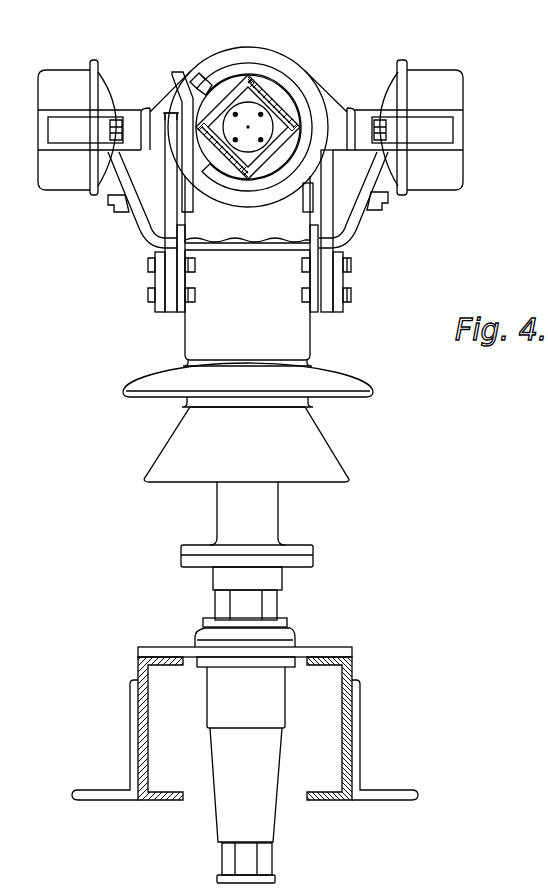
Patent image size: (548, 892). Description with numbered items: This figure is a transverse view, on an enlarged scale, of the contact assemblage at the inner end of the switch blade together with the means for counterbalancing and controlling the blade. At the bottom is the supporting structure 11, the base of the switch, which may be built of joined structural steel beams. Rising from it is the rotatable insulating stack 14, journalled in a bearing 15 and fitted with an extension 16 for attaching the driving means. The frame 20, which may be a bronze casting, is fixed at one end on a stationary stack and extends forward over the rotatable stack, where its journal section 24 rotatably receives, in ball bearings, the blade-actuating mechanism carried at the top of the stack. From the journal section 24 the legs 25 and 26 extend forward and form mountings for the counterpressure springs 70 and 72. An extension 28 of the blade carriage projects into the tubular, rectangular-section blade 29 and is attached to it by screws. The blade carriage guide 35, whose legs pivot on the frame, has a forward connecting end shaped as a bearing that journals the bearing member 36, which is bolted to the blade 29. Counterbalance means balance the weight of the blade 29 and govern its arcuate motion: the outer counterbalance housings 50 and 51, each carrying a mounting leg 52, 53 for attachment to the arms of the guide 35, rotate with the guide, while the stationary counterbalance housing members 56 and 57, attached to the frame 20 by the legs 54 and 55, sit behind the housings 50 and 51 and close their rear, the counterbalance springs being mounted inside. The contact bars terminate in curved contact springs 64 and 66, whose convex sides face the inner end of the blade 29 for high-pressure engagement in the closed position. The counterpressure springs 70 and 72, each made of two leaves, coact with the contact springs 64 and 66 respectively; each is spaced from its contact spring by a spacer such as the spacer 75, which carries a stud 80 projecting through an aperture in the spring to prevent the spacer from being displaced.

The supporting structure 11 is at (386, 714).
The rotatable insulating stack 14 is at (366, 477).
The bearing 15 is at (295, 630).
The extension 16 is at (228, 837).
The frame 20 is at (232, 305).
The journal section 24 is at (233, 243).
The leg 25 is at (317, 312).
The leg 26 is at (178, 312).
The extension 28 is at (250, 98).
The blade 29 is at (275, 90).
The blade carriage guide 35 is at (228, 49).
The bearing member 36 is at (213, 77).
The outer counterbalance housing 50 is at (450, 96).
The outer counterbalance housing 51 is at (45, 97).
The mounting leg 52 is at (430, 137).
The mounting leg 53 is at (75, 138).
The leg 54 is at (362, 218).
The leg 55 is at (132, 217).
The stationary counterbalance housing member 56 is at (388, 92).
The stationary counterbalance housing member 57 is at (103, 88).
The contact spring 64 is at (310, 197).
The contact spring 66 is at (180, 72).
The counterpressure spring 70 is at (332, 185).
The counterpressure spring 72 is at (172, 172).
The spacer 75 is at (182, 100).
The stud 80 is at (165, 113).